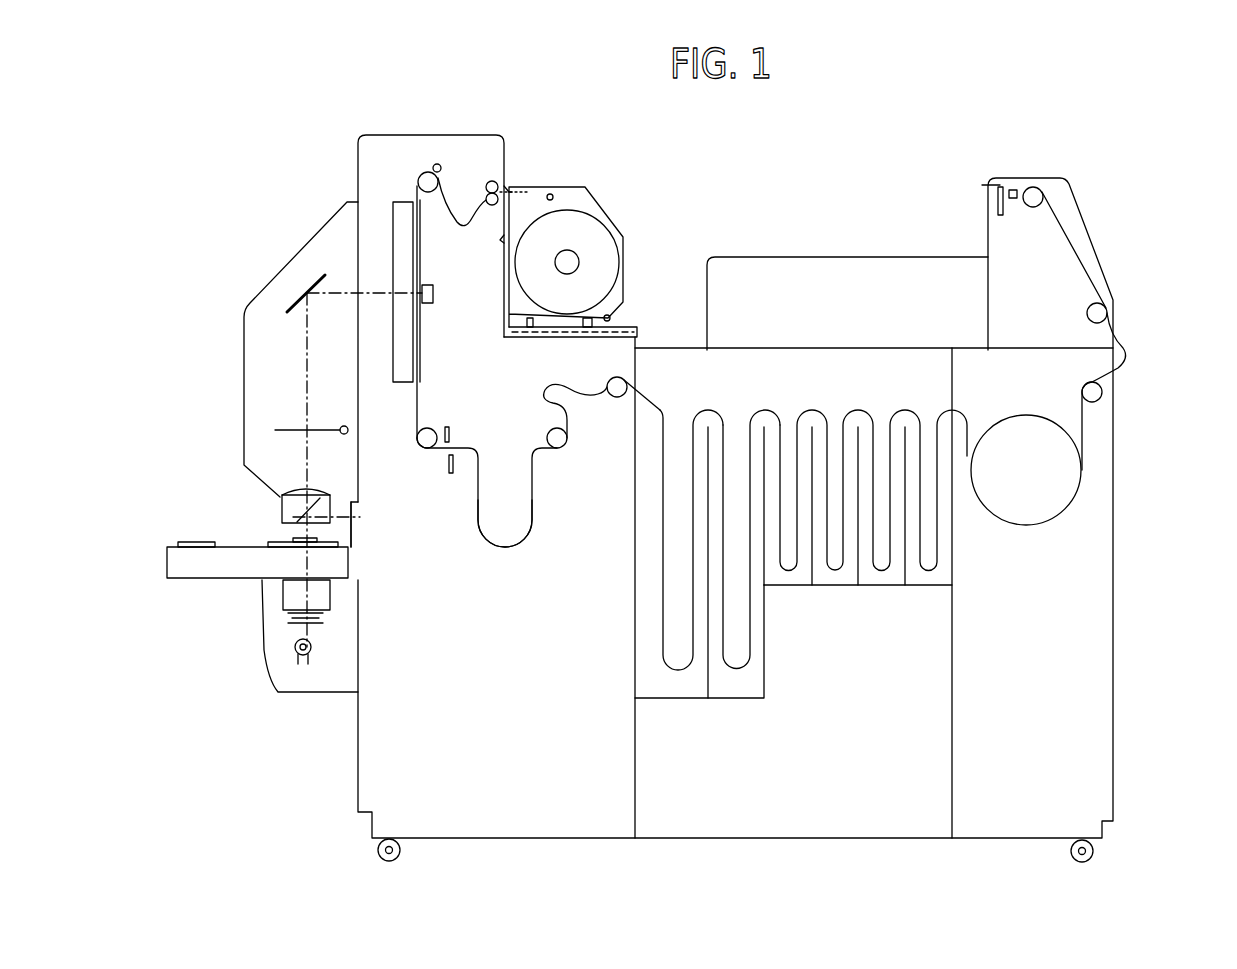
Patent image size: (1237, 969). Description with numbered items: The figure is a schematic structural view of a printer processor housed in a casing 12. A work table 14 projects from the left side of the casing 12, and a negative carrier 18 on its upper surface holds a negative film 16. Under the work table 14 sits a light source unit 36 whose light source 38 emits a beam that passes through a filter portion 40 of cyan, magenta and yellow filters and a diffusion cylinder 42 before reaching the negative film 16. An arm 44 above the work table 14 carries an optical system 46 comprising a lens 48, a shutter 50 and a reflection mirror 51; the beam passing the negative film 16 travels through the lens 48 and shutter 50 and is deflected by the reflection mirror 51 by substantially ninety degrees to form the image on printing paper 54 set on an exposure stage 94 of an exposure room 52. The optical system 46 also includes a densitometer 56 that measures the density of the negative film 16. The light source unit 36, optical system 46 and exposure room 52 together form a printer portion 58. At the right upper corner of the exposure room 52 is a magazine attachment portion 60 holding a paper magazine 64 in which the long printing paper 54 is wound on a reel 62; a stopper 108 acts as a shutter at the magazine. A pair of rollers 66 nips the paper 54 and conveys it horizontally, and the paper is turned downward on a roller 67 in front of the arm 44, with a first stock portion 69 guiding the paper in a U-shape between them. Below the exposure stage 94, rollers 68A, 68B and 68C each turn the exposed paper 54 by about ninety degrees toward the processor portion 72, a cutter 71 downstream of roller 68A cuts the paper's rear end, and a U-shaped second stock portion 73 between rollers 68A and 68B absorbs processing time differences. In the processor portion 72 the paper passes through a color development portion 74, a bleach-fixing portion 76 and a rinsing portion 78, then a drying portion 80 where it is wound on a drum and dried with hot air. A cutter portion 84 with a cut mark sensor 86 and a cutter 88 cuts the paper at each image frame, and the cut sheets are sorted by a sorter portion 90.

The casing 12 is at (398, 133).
The work table 14 is at (185, 572).
The negative film 16 is at (293, 538).
The negative carrier 18 is at (290, 543).
The light source unit 36 is at (261, 657).
The light source 38 is at (320, 653).
The filter portion 40 is at (284, 621).
The diffusion cylinder 42 is at (290, 597).
The arm 44 is at (282, 277).
The optical system 46 is at (288, 448).
The lens 48 is at (317, 493).
The shutter 50 is at (292, 425).
The reflection mirror 51 is at (322, 276).
The exposure room 52 is at (488, 283).
The printing paper 54 is at (614, 228).
The densitometer 56 is at (357, 517).
The printer portion 58 is at (275, 853).
The magazine attachment portion 60 is at (506, 190).
The reel 62 is at (567, 262).
The paper magazine 64 is at (590, 204).
The pair of rollers 66 is at (488, 178).
The roller 67 is at (428, 182).
The roller 68A is at (433, 436).
The roller 68B is at (553, 437).
The roller 68C is at (610, 383).
The first stock portion 69 is at (462, 212).
The cutter 71 is at (451, 457).
The processor portion 72 is at (637, 853).
The second stock portion 73 is at (508, 535).
The color development portion 74 is at (673, 688).
The bleach-fixing portion 76 is at (742, 688).
The rinsing portion 78 is at (772, 590).
The drying portion 80 is at (1085, 730).
The cutter portion 84 is at (1053, 177).
The cut mark sensor 86 is at (1012, 202).
The cutter 88 is at (1008, 200).
The sorter portion 90 is at (762, 256).
The exposure stage 94 is at (424, 364).
The stopper 108 is at (510, 192).